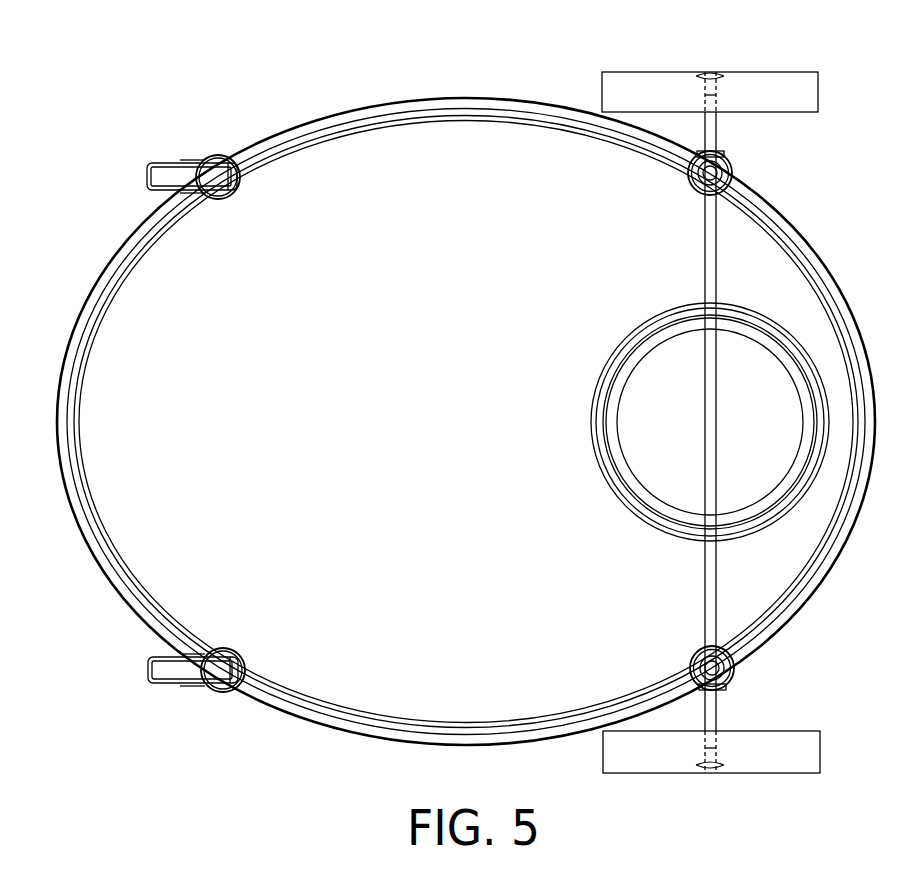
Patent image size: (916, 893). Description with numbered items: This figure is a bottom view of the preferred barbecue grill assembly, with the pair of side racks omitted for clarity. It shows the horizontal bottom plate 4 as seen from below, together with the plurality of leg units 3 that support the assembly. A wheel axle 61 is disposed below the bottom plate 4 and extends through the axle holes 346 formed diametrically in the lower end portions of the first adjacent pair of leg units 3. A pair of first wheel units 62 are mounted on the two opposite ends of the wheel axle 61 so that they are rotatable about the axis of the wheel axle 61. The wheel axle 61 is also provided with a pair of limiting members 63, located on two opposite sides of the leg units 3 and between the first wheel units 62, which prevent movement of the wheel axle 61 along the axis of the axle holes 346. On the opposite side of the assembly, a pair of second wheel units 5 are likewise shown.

The leg unit 3 is at (736, 362).
The bottom plate 4 is at (772, 273).
The second wheel unit 5 is at (193, 160).
The wheel axle 61 is at (708, 252).
The first wheel unit 62 is at (767, 77).
The limiting member 63 is at (723, 155).
The axle hole 346 is at (727, 173).